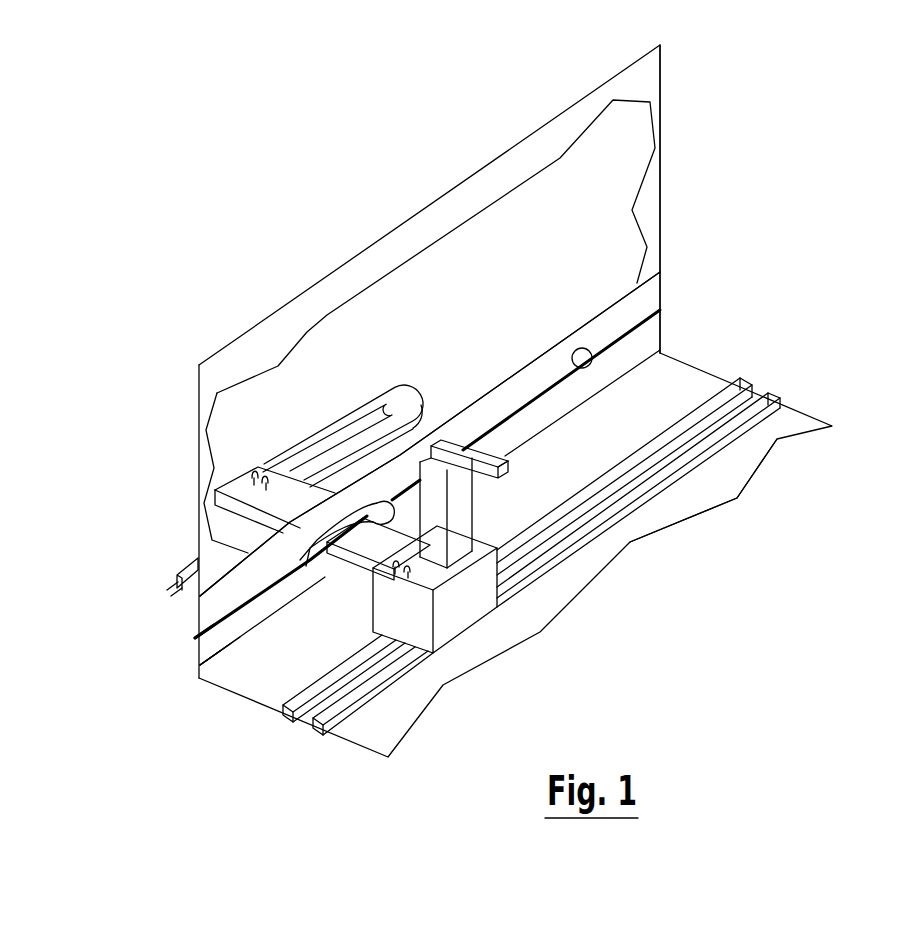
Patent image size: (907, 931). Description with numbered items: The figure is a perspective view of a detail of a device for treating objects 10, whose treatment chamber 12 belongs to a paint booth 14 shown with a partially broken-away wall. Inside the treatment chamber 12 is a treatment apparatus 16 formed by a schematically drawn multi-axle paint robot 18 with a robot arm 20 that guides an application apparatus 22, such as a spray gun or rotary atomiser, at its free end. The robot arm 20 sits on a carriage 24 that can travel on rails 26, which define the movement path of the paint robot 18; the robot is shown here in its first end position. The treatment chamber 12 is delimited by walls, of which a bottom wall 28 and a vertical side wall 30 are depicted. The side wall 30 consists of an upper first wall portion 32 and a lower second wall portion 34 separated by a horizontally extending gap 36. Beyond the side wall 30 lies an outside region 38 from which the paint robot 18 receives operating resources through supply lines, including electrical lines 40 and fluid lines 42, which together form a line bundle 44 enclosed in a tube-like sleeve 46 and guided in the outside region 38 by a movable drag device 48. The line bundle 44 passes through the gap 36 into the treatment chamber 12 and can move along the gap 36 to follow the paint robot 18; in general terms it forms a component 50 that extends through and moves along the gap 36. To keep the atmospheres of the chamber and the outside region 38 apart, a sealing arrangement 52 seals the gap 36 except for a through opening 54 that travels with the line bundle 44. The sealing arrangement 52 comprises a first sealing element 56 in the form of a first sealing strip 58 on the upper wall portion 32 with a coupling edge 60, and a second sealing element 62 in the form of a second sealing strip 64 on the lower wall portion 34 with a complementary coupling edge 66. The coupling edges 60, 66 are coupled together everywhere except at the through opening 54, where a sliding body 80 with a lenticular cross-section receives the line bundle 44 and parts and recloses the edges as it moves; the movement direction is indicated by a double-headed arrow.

The device for treating objects 10 is at (190, 147).
The treatment chamber 12 is at (773, 248).
The paint booth 14 is at (243, 700).
The treatment apparatus 16 is at (445, 412).
The paint robot 18 is at (461, 523).
The robot arm 20 is at (453, 450).
The application apparatus 22 is at (503, 477).
The carriage 24 is at (464, 612).
The rails 26 is at (782, 386).
The bottom wall 28 is at (727, 487).
The side wall 30 is at (653, 210).
The first wall portion 32 is at (655, 283).
The second wall portion 34 is at (655, 345).
The gap 36 is at (528, 393).
The outside region 38 is at (437, 283).
The electrical lines 40 is at (166, 577).
The fluid lines 42 is at (172, 598).
The line bundle 44 is at (246, 464).
The sleeve 46 is at (245, 513).
The drag device 48 is at (321, 417).
The component 50 is at (377, 581).
The sealing arrangement 52 is at (188, 637).
The through opening 54 is at (395, 508).
The first sealing element 56 is at (202, 606).
The first sealing strip 58 is at (213, 622).
The coupling edge 60 is at (582, 348).
The second sealing element 62 is at (200, 650).
The second sealing strip 64 is at (205, 656).
The coupling edge 66 is at (573, 473).
The sliding body 80 is at (326, 580).